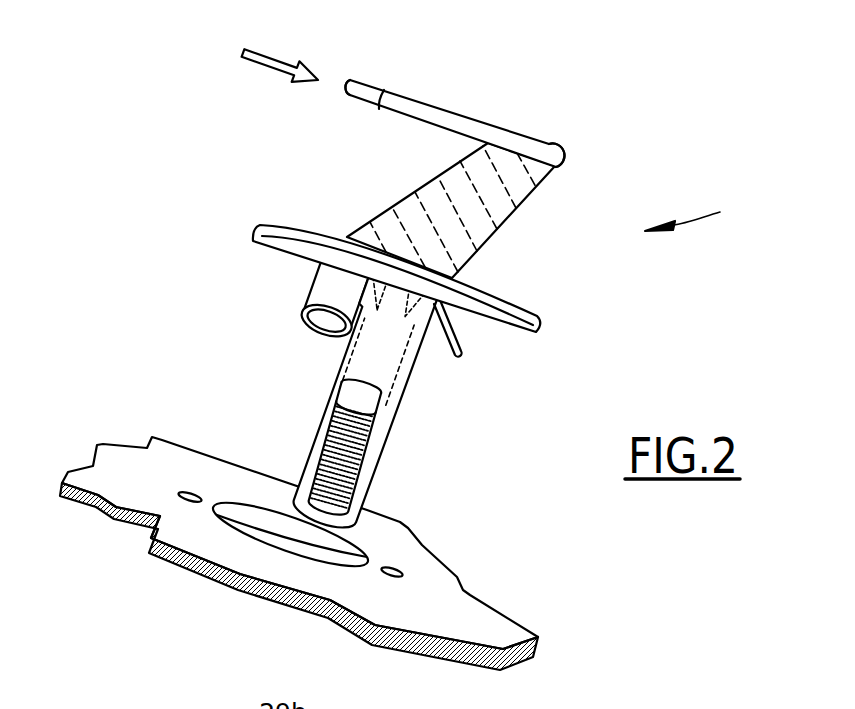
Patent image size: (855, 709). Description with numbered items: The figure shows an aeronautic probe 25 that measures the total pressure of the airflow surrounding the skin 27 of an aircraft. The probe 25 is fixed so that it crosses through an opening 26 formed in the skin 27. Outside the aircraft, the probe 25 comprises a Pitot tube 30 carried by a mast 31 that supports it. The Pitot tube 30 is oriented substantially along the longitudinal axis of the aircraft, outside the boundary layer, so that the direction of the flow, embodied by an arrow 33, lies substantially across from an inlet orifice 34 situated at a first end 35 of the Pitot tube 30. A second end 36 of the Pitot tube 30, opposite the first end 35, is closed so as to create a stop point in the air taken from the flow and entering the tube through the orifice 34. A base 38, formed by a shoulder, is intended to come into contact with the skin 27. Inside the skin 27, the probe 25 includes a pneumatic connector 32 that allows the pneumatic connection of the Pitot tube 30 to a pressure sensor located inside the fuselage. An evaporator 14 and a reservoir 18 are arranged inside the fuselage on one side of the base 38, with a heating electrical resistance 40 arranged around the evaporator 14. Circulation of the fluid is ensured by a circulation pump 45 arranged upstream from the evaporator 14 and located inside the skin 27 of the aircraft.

The evaporator 14 is at (380, 465).
The reservoir 18 is at (402, 358).
The aeronautic probe 25 is at (697, 213).
The opening 26 is at (368, 553).
The skin 27 is at (486, 612).
The Pitot tube 30 is at (466, 112).
The mast 31 is at (403, 204).
The pneumatic connector 32 is at (312, 297).
The arrow 33 is at (274, 54).
The inlet orifice 34 is at (342, 84).
The first end 35 is at (360, 104).
The second end 36 is at (556, 148).
The base 38 is at (526, 311).
The heating electrical resistance 40 is at (380, 430).
The circulation pump 45 is at (348, 387).